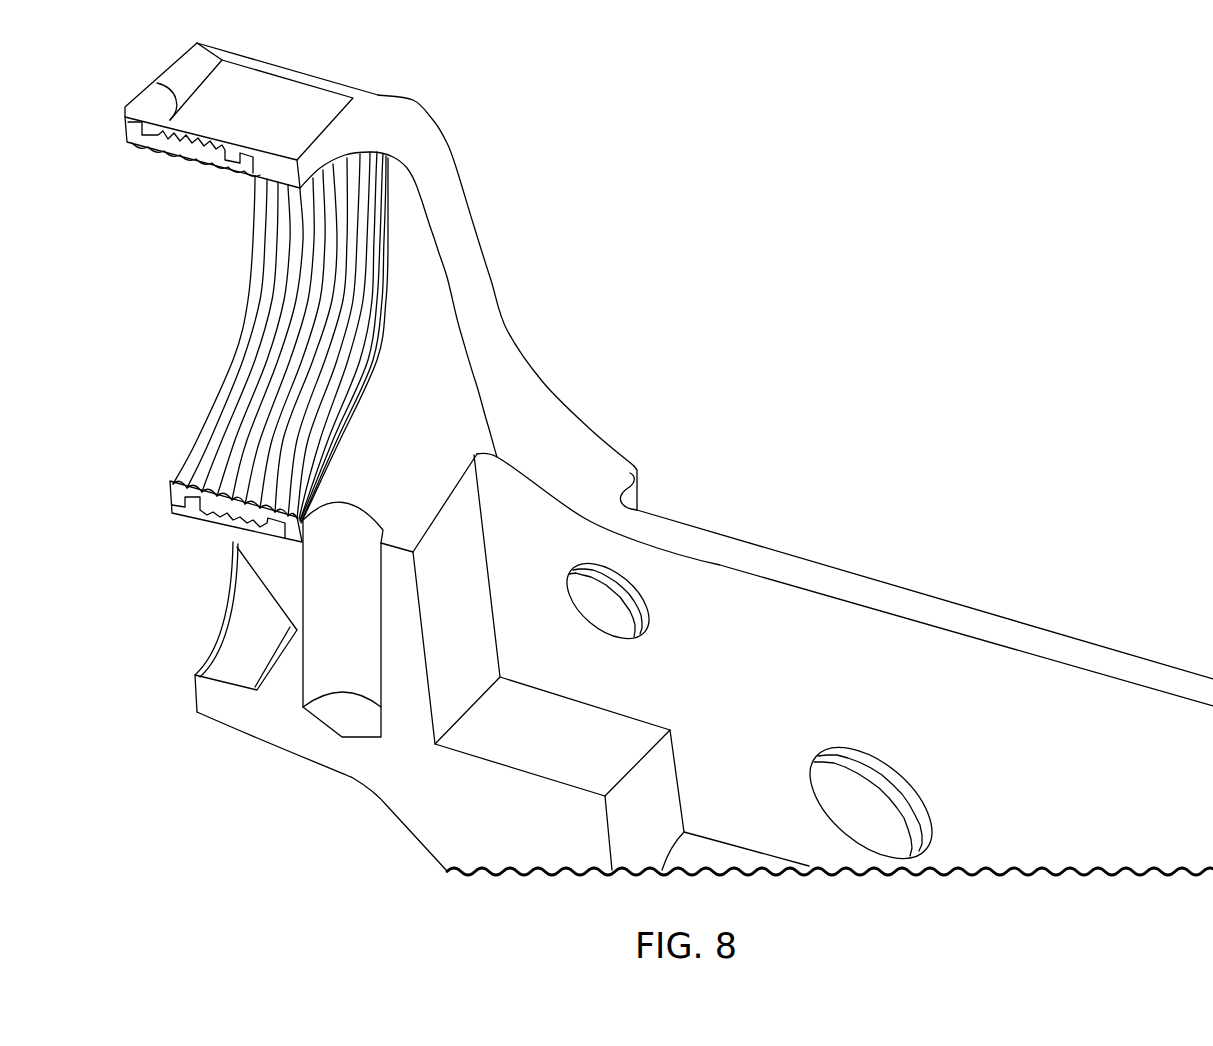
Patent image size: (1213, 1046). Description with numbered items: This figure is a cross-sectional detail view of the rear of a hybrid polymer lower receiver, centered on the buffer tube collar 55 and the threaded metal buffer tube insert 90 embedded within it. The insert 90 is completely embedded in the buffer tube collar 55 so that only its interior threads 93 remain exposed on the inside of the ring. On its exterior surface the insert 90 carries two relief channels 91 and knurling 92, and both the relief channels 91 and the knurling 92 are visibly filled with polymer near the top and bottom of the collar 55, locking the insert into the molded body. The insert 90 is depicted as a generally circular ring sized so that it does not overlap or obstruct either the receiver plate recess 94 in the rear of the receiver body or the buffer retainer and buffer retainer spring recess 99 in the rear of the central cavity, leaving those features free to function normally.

The buffer tube collar 55 is at (390, 118).
The buffer tube insert 90 is at (172, 340).
The relief channels 91 is at (280, 533).
The knurling 92 is at (178, 143).
The interior threads 93 is at (233, 482).
The receiver plate recess 94 is at (237, 660).
The buffer retainer and buffer retainer spring recess 99 is at (317, 663).